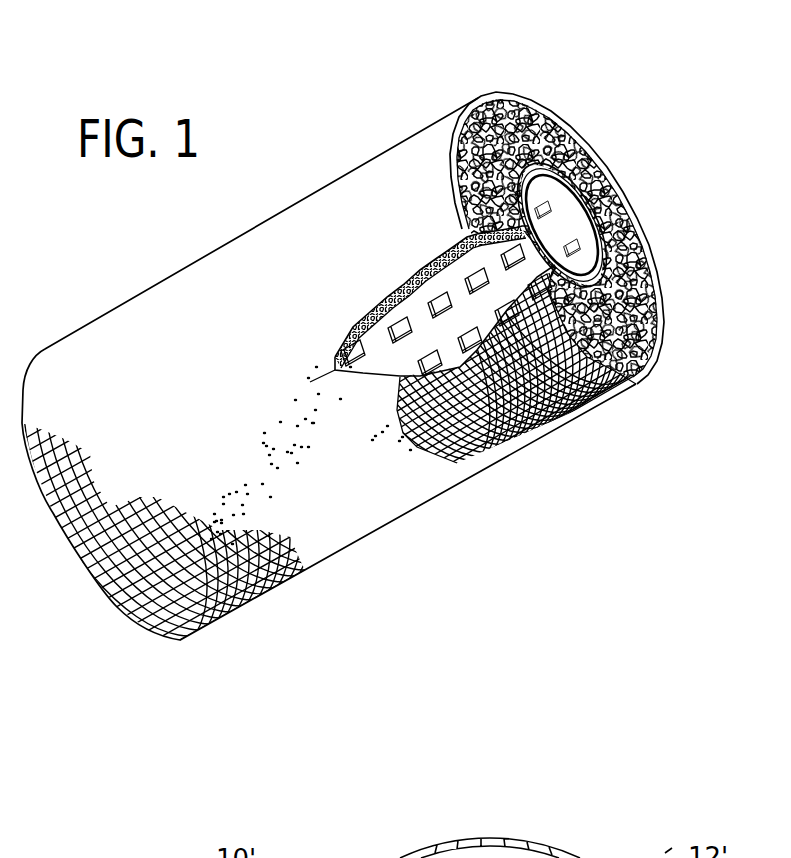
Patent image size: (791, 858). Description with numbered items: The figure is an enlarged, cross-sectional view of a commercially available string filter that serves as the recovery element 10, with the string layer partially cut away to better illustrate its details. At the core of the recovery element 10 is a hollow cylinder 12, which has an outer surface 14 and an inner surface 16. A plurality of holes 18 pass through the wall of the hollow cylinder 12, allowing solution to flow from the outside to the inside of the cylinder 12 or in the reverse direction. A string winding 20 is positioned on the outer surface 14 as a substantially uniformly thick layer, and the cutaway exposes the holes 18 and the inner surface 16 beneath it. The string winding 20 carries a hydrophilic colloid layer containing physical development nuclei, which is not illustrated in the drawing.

The recovery element 10 is at (543, 502).
The hollow cylinder 12 is at (598, 192).
The outer surface 14 is at (405, 292).
The inner surface 16 is at (587, 243).
The holes 18 is at (438, 268).
The string winding 20 is at (518, 104).